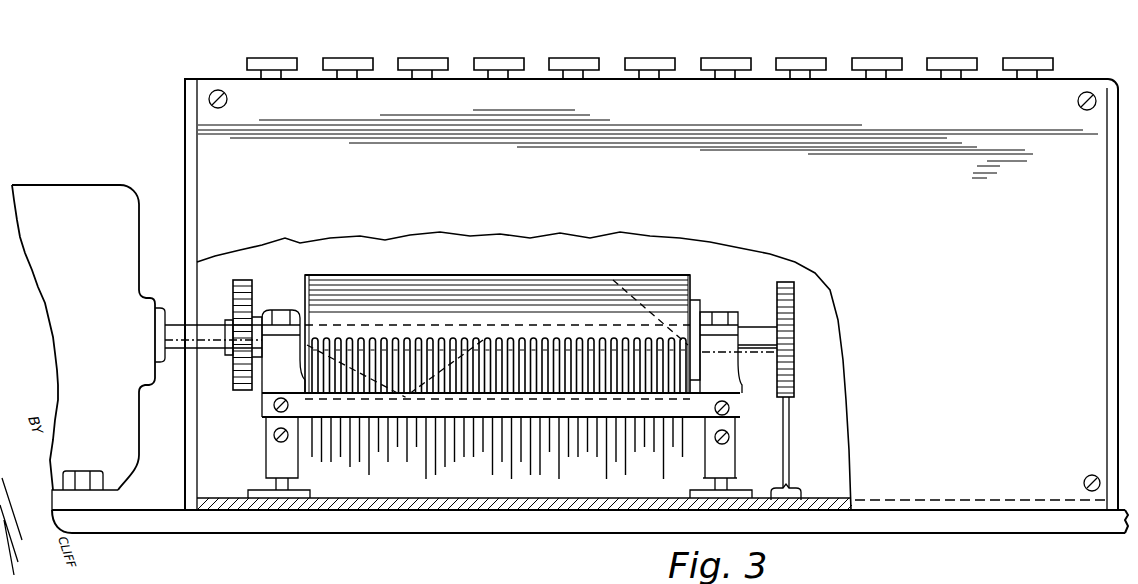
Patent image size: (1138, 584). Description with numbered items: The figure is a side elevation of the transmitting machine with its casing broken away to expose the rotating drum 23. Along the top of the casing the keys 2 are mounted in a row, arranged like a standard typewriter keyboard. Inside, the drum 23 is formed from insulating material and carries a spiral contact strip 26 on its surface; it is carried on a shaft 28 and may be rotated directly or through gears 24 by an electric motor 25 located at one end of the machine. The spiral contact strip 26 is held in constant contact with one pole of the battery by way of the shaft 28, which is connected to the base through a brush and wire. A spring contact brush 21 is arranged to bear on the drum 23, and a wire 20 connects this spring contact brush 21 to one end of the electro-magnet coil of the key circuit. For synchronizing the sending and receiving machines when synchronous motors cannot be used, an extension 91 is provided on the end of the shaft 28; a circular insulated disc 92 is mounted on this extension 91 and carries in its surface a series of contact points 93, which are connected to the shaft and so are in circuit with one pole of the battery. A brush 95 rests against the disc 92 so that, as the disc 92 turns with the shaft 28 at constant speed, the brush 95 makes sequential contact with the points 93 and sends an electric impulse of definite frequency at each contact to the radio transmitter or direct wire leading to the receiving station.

The keys 2 is at (415, 60).
The wire 20 is at (385, 462).
The spring contact brush 21 is at (408, 340).
The drum 23 is at (475, 283).
The gears 24 is at (252, 290).
The electric motor 25 is at (125, 261).
The spiral contact strip 26 is at (483, 340).
The shaft 28 is at (215, 348).
The extension 91 is at (748, 330).
The circular insulated disc 92 is at (794, 333).
The contact points 93 is at (794, 316).
The brush 95 is at (789, 448).